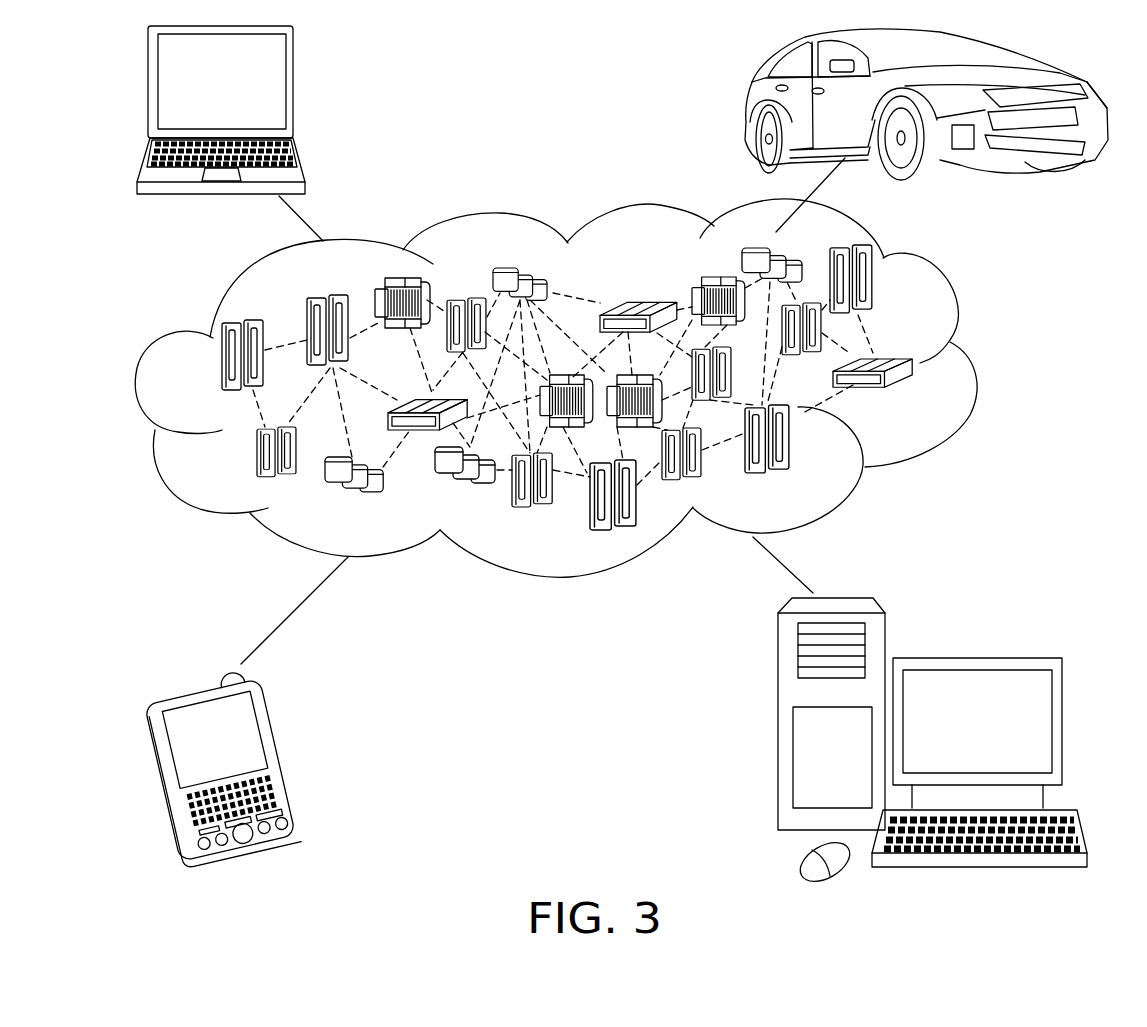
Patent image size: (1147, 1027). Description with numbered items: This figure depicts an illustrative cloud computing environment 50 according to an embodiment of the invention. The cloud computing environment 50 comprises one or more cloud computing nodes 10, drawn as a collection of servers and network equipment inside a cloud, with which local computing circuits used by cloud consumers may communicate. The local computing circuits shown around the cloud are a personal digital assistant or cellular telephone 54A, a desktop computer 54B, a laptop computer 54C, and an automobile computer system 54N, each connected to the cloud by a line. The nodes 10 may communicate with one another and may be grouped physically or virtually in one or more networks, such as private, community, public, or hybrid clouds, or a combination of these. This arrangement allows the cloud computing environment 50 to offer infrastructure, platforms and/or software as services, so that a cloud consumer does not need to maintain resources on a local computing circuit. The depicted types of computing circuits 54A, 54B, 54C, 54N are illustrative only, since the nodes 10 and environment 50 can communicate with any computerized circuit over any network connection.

The cloud computing nodes 10 is at (913, 397).
The cloud computing environment 50 is at (973, 367).
The personal digital assistant or cellular telephone 54A is at (281, 750).
The desktop computer 54B is at (973, 657).
The laptop computer 54C is at (293, 89).
The automobile computer system 54N is at (750, 104).